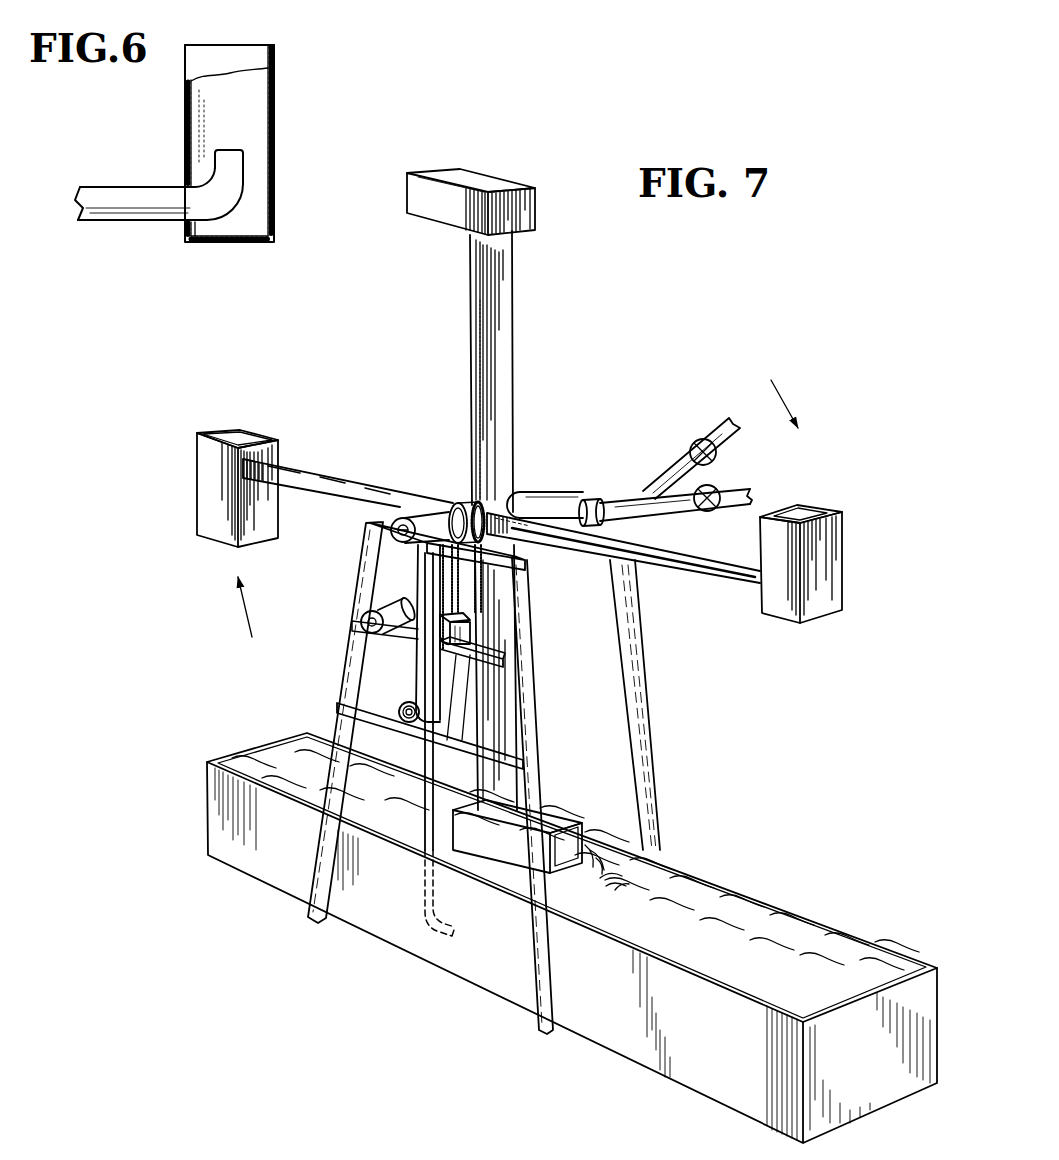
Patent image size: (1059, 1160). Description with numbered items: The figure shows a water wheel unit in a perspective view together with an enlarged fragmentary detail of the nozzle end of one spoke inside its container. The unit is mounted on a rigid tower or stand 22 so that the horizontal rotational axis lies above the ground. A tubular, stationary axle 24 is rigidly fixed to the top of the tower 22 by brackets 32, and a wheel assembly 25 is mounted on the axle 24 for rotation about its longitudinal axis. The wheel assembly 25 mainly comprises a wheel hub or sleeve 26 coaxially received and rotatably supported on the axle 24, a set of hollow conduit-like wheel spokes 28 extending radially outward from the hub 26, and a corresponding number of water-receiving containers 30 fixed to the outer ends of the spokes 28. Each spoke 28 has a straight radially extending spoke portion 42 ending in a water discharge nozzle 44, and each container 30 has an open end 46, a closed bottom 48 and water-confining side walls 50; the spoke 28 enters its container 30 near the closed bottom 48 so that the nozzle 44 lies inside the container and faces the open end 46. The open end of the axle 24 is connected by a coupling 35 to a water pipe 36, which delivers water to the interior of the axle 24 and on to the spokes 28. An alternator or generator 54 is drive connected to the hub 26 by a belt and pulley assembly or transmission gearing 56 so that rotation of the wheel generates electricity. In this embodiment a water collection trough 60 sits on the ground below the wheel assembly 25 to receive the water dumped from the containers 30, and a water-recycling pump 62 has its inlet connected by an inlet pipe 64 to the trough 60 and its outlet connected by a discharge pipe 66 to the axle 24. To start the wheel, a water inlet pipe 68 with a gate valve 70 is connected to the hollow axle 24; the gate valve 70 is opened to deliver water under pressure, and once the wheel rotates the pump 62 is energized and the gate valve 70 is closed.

In FIG. 7, the tower or stand 22 is at (500, 778).
In FIG. 7, the stationary axle 24 is at (426, 517).
In FIG. 7, the wheel assembly 25 is at (501, 583).
In FIG. 7, the wheel hub or sleeve 26 is at (528, 492).
In FIG. 6, the wheel spokes 28 is at (159, 219).
In FIG. 7, the wheel spokes 28 is at (508, 363).
In FIG. 6, the water-receiving containers 30 is at (273, 143).
In FIG. 7, the water-receiving containers 30 is at (516, 512).
In FIG. 7, the brackets 32 is at (452, 503).
In FIG. 7, the coupling 35 is at (590, 499).
In FIG. 7, the water pipe 36 is at (745, 491).
In FIG. 6, the spoke portion 42 is at (153, 188).
In FIG. 6, the water discharge nozzle 44 is at (240, 158).
In FIG. 6, the open end 46 is at (247, 46).
In FIG. 7, the open end 46 is at (813, 504).
In FIG. 6, the closed bottom 48 is at (233, 243).
In FIG. 7, the closed bottom 48 is at (527, 203).
In FIG. 6, the side walls 50 is at (276, 126).
In FIG. 7, the side walls 50 is at (452, 215).
In FIG. 7, the alternator or generator 54 is at (402, 603).
In FIG. 7, the belt and pulley assembly or transmission gearing 56 is at (470, 631).
In FIG. 7, the water collection trough 60 is at (212, 808).
In FIG. 7, the water-recycling pump 62 is at (405, 703).
In FIG. 7, the inlet pipe 64 is at (420, 757).
In FIG. 7, the discharge pipe 66 is at (420, 663).
In FIG. 7, the water inlet pipe 68 is at (719, 426).
In FIG. 7, the gate valve 70 is at (691, 444).